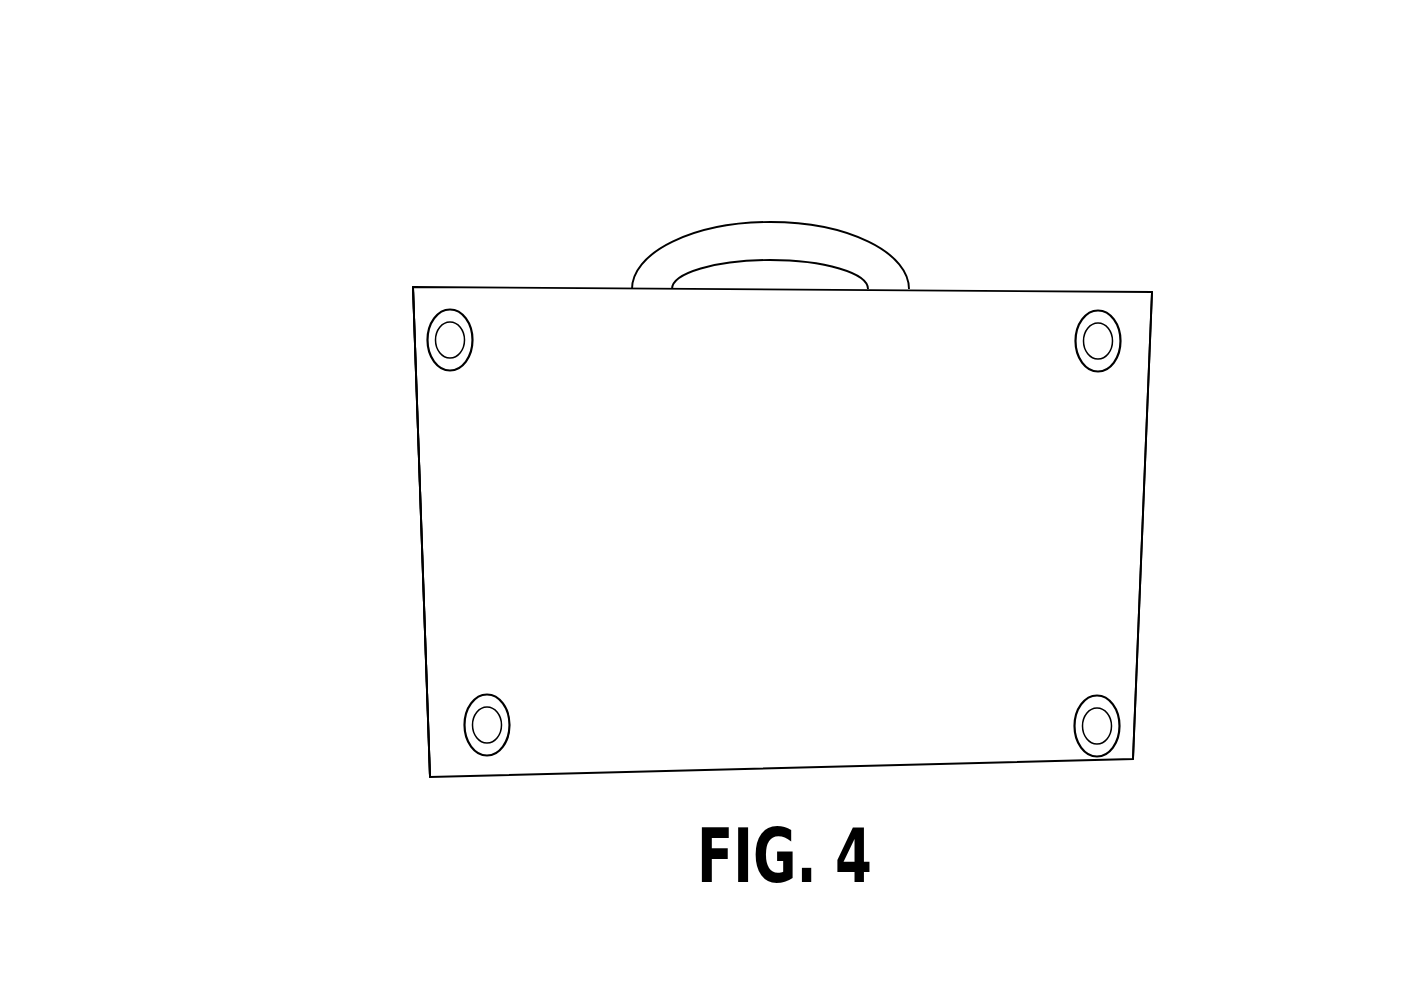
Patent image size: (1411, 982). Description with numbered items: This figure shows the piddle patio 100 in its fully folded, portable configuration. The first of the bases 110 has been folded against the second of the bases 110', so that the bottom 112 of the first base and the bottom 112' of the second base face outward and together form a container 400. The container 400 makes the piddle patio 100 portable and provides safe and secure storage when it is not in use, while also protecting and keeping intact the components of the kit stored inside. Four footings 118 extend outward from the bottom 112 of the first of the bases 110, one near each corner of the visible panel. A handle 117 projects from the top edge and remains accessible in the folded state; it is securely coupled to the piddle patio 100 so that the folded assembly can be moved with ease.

The piddle patio 100 is at (748, 44).
The first base 110 is at (908, 532).
The second base 110' is at (336, 532).
The bottom of first base 112 is at (1194, 525).
The bottom of second base 112' is at (316, 520).
The handle 117 is at (777, 222).
The footings 118 is at (431, 318).
The container 400 is at (215, 512).